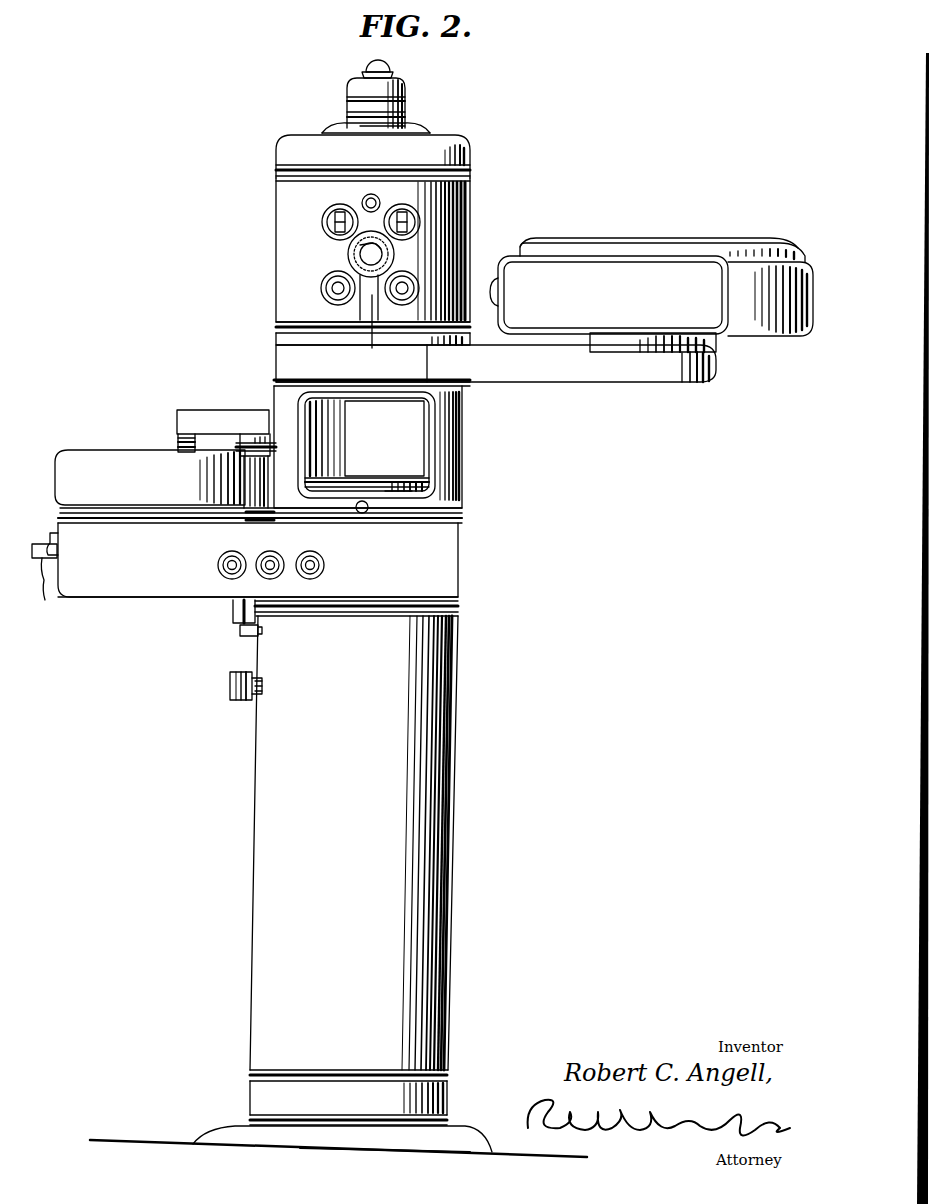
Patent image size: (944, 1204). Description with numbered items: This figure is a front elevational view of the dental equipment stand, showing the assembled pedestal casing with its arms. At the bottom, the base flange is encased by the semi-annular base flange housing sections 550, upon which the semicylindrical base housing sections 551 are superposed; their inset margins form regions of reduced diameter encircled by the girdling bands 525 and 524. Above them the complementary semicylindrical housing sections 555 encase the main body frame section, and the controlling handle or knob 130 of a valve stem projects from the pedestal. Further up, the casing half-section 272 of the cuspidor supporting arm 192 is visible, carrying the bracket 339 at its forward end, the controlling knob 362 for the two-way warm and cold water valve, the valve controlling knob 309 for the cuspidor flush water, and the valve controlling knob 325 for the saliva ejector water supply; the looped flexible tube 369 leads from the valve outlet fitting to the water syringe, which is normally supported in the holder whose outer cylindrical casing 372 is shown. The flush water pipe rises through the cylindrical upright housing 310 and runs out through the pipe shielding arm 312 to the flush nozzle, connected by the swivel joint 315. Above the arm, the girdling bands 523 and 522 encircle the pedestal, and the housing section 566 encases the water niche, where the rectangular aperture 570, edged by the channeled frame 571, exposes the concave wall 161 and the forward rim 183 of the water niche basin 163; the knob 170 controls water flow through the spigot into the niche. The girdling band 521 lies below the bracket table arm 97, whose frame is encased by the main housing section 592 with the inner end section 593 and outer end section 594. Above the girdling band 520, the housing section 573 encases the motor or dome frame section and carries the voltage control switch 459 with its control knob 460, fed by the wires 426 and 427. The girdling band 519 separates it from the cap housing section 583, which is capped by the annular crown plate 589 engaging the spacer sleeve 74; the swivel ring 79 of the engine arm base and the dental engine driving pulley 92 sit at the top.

The dental engine driving pulley 92 is at (394, 73).
The swivel ring 79 is at (348, 98).
The annular crown plate 589 is at (336, 127).
The spacer sleeve 74 is at (405, 121).
The dome or cap housing section 583 is at (278, 155).
The girdling band 519 is at (466, 177).
The semicylindrical housing section 573 is at (280, 205).
The voltage control switch 459 is at (352, 252).
The control knob 460 is at (368, 256).
The wire 426 is at (372, 308).
The wire 427 is at (368, 332).
The girdling band 520 is at (282, 324).
The inner end section 593 is at (272, 356).
The outer end section 594 is at (718, 371).
The main housing section 592 is at (495, 376).
The accessory table arm 97 is at (550, 386).
The girdling band 521 is at (280, 379).
The housing section 566 is at (463, 494).
The rectangular aperture 570 is at (432, 439).
The channeled frame 571 is at (432, 470).
The concave wall 161 is at (410, 446).
The forward rim 183 is at (375, 478).
The knob 170 is at (355, 511).
The water niche basin 163 is at (394, 492).
The girdling band 522 is at (464, 522).
The pipe shielding arm 312 is at (210, 412).
The cylindrical upright housing 310 is at (253, 433).
The swivel joint 315 is at (178, 444).
The outer cylindrical casing 372 is at (251, 500).
The casing half-section 272 is at (252, 523).
The bracket 339 is at (50, 583).
The controlling knob 362 is at (218, 563).
The valve controlling knob 309 is at (270, 572).
The valve controlling knob 325 is at (325, 565).
The cuspidor supporting arm 192 is at (173, 598).
The girdling band 523 is at (462, 612).
The looped flexible tube 369 is at (233, 616).
The controlling handle or knob 130 is at (228, 684).
The semicylindrical housing section 555 is at (262, 837).
The girdling band 524 is at (449, 1079).
The semicylindrical base housing section 551 is at (256, 1098).
The girdling band 525 is at (252, 1122).
The semi-annular base flange housing section 550 is at (452, 1142).